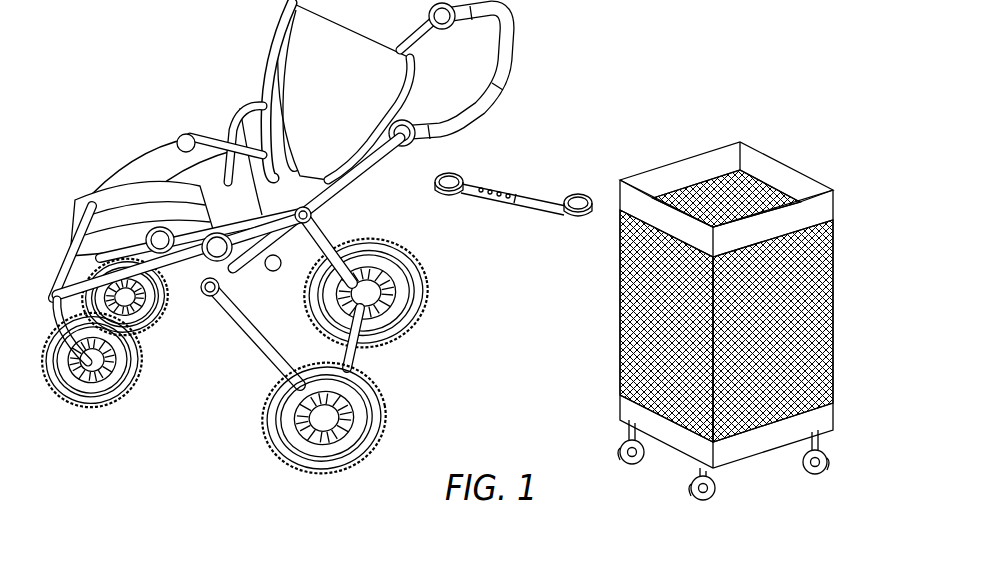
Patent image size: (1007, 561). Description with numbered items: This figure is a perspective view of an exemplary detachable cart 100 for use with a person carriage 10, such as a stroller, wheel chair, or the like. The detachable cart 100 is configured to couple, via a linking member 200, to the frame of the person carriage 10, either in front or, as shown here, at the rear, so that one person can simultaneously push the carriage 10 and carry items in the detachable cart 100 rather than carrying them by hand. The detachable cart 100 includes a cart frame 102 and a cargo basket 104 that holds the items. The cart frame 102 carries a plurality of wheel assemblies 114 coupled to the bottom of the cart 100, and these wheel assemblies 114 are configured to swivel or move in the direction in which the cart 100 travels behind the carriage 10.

The person carriage 10 is at (156, 58).
The linking member 200 is at (528, 156).
The detachable cart 100 is at (868, 226).
The cart frame 102 is at (835, 355).
The cargo basket 104 is at (620, 330).
The wheel assemblies 114 is at (717, 493).